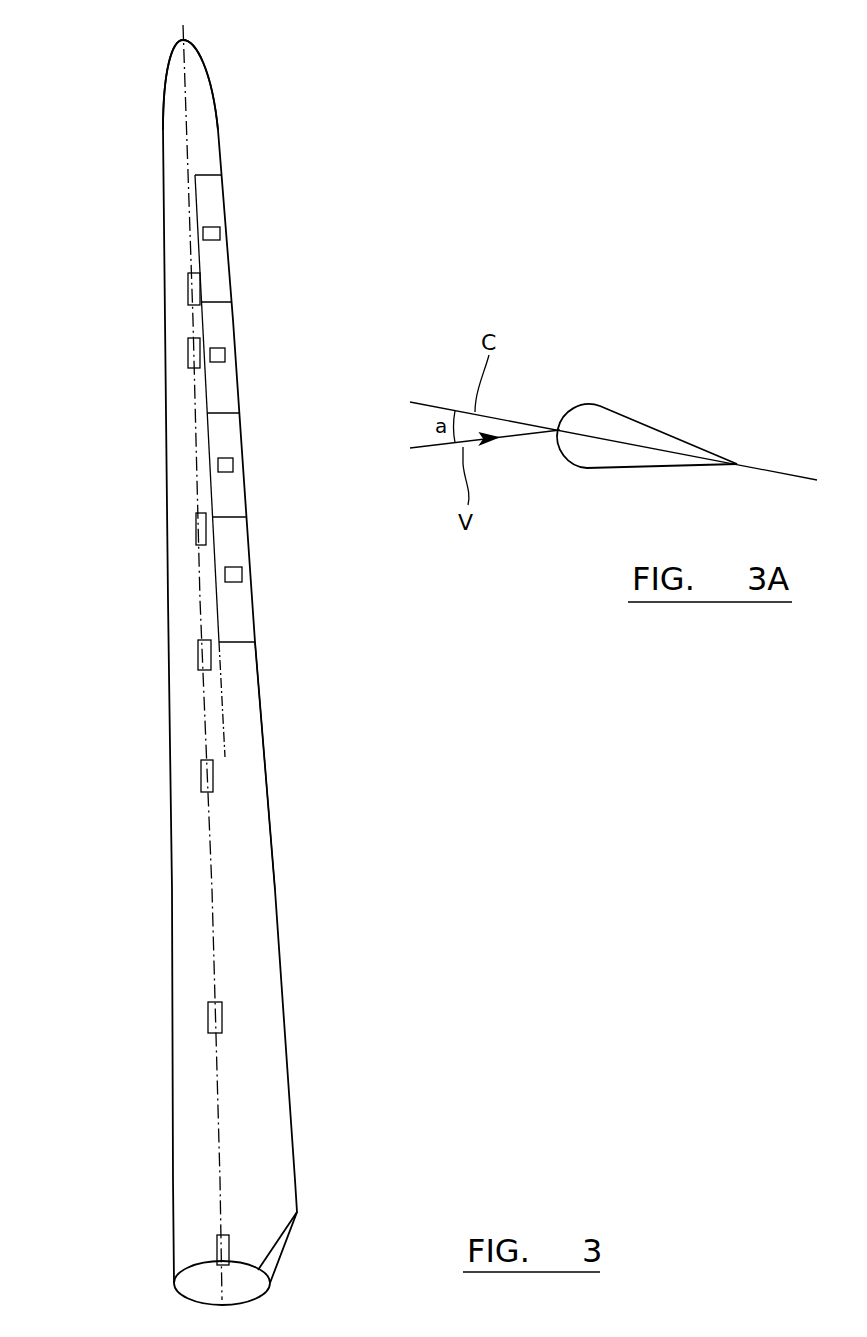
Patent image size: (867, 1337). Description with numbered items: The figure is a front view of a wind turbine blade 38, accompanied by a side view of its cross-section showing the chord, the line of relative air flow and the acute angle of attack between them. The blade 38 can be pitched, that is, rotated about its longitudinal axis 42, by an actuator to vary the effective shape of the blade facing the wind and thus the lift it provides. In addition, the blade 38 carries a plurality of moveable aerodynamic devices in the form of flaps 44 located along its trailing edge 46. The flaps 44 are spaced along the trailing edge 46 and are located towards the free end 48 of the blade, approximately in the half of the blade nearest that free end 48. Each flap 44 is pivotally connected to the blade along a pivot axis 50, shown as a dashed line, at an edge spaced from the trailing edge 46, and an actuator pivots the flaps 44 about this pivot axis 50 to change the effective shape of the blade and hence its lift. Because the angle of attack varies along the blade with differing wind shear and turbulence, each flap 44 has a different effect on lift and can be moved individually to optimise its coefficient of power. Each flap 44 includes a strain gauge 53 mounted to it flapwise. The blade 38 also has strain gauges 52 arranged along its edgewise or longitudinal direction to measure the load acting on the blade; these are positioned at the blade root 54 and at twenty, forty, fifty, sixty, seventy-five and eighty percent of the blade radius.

In FIG. 3, the wind turbine blade 38 is at (257, 913).
In FIG. 3A, the wind turbine blade 38 is at (615, 427).
In FIG. 3, the longitudinal axis 42 is at (218, 1100).
In FIG. 3, the flaps 44 is at (217, 270).
In FIG. 3, the trailing edge 46 is at (260, 680).
In FIG. 3, the free end 48 is at (207, 60).
In FIG. 3, the pivot axis 50 is at (225, 733).
In FIG. 3, the strain gauges 52 is at (188, 293).
In FIG. 3, the strain gauge 53 is at (214, 233).
In FIG. 3, the blade root 54 is at (263, 1242).